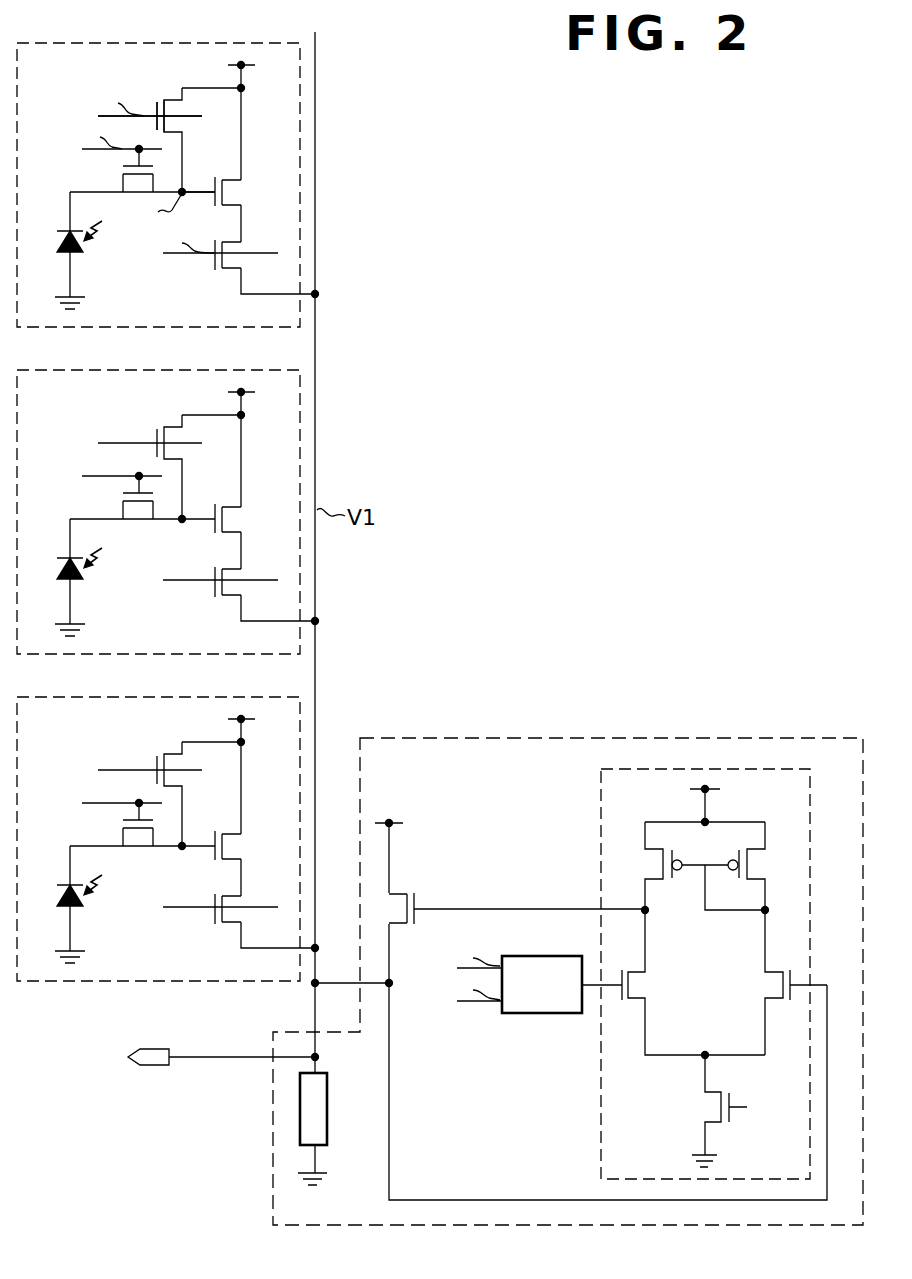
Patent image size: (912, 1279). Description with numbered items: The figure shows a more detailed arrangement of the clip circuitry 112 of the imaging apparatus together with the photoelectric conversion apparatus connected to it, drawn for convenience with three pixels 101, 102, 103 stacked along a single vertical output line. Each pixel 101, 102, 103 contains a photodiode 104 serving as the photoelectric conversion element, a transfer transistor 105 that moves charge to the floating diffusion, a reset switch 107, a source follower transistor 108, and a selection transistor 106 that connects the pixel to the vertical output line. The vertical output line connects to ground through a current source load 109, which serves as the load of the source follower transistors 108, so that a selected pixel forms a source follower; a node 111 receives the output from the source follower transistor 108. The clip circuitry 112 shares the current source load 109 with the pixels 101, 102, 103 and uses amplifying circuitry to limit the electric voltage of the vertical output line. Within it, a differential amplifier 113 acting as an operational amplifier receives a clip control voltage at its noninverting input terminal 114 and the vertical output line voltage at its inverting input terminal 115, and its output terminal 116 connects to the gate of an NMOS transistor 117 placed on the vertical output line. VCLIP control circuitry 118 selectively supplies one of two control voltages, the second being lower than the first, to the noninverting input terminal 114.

The pixel 101 is at (100, 43).
The pixel 102 is at (100, 368).
The pixel 103 is at (100, 695).
The photodiode 104 is at (57, 237).
The transfer transistor 105 is at (122, 172).
The selection transistor 106 is at (216, 271).
The reset switch 107 is at (143, 101).
The source follower transistor 108 is at (215, 177).
The current source load 109 is at (345, 1100).
The node 111 is at (149, 1049).
The clip circuitry 112 is at (770, 738).
The differential amplifier 113 is at (600, 800).
The noninverting input terminal 114 is at (622, 1003).
The inverting input terminal 115 is at (828, 998).
The output terminal 116 is at (525, 909).
The NMOS transistor 117 is at (414, 893).
The VCLIP control circuitry 118 is at (540, 1015).